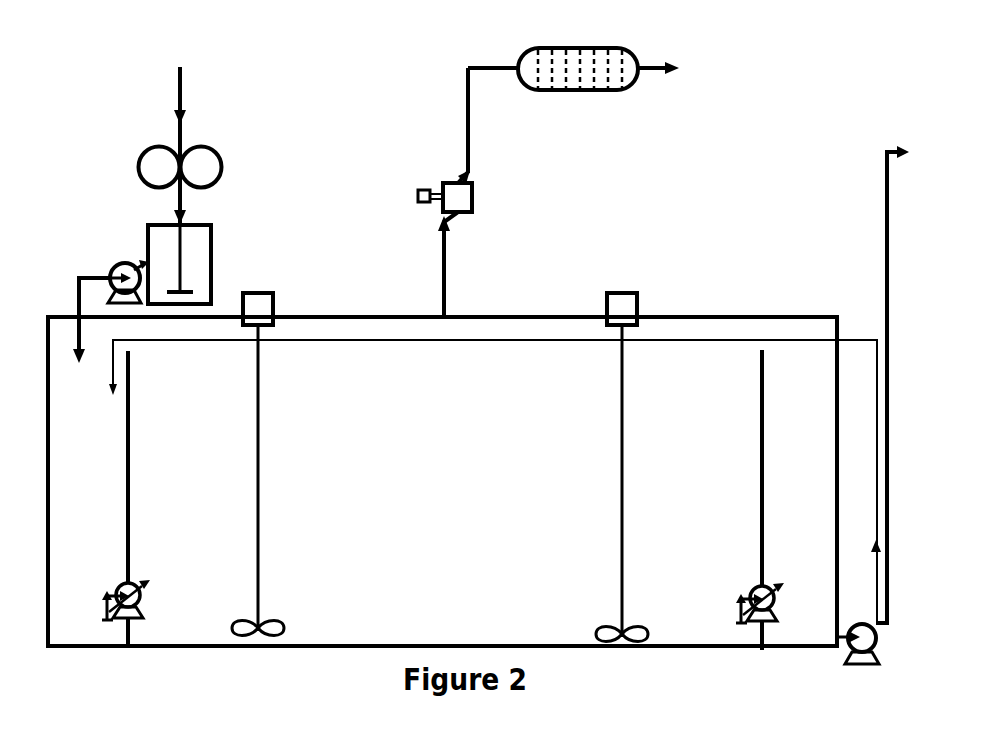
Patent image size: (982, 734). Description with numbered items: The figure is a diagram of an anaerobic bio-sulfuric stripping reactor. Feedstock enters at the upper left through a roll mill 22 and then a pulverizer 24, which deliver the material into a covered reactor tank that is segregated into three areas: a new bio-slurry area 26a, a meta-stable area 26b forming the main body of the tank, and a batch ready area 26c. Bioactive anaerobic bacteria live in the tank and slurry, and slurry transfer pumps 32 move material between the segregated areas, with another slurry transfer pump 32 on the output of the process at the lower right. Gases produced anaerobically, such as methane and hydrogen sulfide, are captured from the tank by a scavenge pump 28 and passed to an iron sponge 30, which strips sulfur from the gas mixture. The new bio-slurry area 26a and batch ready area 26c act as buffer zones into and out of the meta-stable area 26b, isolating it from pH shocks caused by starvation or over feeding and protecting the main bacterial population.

The roll mill 22 is at (164, 146).
The pulverizer 24 is at (111, 290).
The new bio-slurry area 26a is at (97, 468).
The meta-stable area 26b is at (442, 481).
The batch ready area 26c is at (795, 468).
The scavenge pump 28 is at (468, 193).
The iron sponge 30 is at (573, 87).
The slurry transfer pumps 32 is at (492, 642).